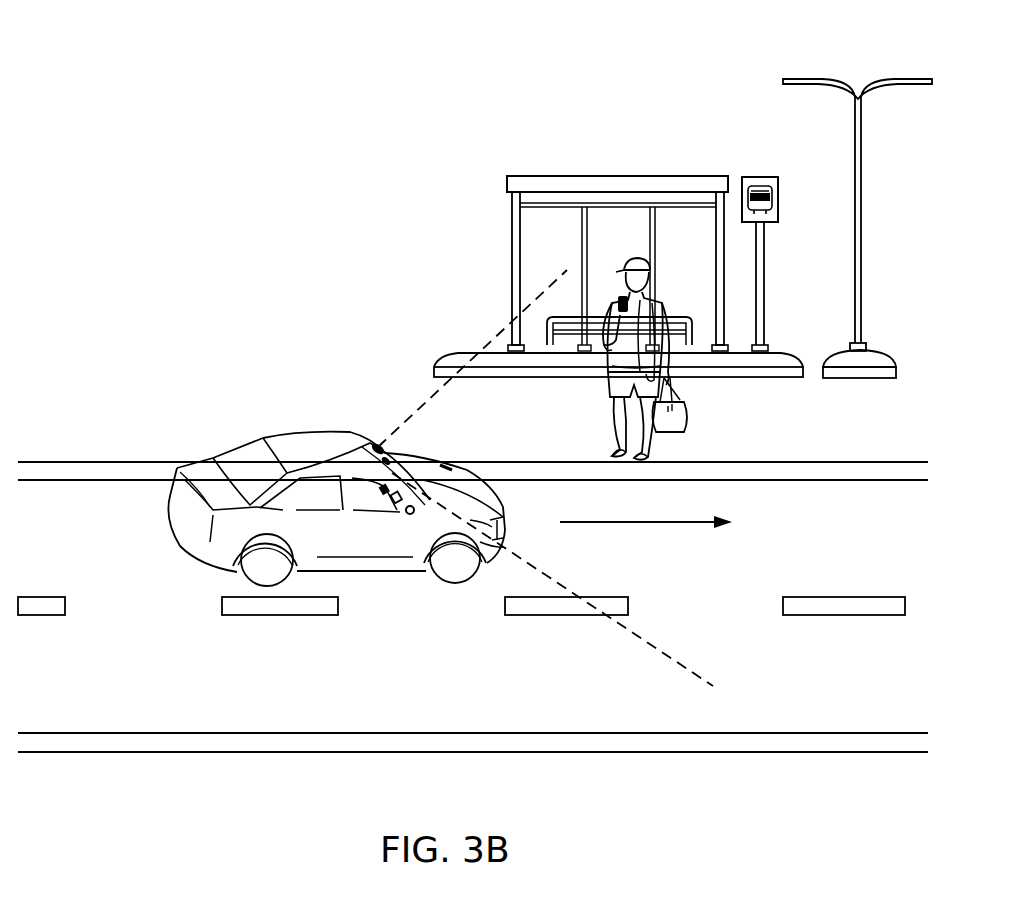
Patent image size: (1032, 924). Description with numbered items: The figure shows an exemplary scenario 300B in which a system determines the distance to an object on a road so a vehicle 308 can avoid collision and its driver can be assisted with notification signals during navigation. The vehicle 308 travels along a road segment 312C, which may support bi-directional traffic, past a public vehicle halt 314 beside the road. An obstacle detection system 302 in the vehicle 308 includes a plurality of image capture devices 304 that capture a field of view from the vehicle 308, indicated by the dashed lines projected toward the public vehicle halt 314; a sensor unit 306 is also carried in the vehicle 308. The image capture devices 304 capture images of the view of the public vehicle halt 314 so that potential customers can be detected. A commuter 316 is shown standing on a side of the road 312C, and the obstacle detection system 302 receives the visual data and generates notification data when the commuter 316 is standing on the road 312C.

The driving environment 300B is at (168, 76).
The obstacle detection system 302 is at (386, 520).
The plurality of image capture devices 304 is at (378, 441).
The sensor unit 306 is at (381, 490).
The vehicle 308 is at (208, 465).
The road segment 312C is at (75, 520).
The public vehicle halt 314 is at (624, 173).
The commuter 316 is at (672, 432).